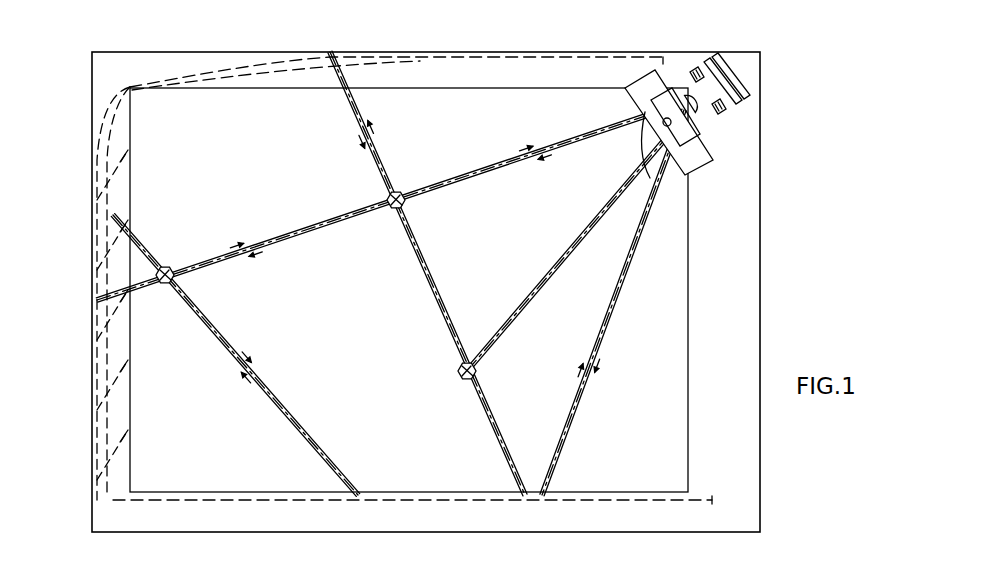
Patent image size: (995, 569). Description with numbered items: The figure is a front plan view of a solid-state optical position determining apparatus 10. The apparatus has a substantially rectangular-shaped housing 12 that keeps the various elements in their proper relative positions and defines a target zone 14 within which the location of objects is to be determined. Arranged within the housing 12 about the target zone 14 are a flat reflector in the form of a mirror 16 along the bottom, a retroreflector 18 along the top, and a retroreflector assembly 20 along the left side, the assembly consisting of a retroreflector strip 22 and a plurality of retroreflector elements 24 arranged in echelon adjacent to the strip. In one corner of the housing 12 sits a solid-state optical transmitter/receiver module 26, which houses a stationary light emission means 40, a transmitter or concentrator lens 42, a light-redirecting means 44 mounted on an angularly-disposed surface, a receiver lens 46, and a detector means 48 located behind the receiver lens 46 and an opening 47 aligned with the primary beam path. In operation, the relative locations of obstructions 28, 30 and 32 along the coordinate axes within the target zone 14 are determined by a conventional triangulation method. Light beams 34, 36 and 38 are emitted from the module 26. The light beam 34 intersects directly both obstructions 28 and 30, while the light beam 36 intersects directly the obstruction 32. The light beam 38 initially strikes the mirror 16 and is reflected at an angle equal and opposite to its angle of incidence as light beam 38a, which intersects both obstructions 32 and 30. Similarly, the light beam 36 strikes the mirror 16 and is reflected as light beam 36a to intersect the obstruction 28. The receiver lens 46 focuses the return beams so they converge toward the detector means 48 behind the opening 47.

The solid-state optical position determining apparatus 10 is at (447, 46).
The housing 12 is at (762, 300).
The target zone 14 is at (518, 251).
The mirror 16 is at (617, 496).
The retroreflector 18 is at (518, 60).
The retroreflector assembly 20 is at (96, 290).
The retroreflector strip 22 is at (108, 150).
The retroreflector elements 24 is at (106, 218).
The optical transmitter/receiver module 26 is at (699, 129).
The obstruction 28 is at (168, 266).
The obstruction 30 is at (402, 192).
The obstruction 32 is at (478, 378).
The light beam 34 is at (573, 141).
The light beam 36 is at (592, 226).
The light beam 36a is at (292, 374).
The light beam 38 is at (616, 298).
The light beam 38a is at (436, 283).
The light emission means 40 is at (655, 135).
The transmitter lens 42 is at (686, 96).
The light-redirecting means 44 is at (706, 172).
The receiver lens 46 is at (688, 80).
The opening 47 is at (704, 62).
The detector means 48 is at (715, 55).